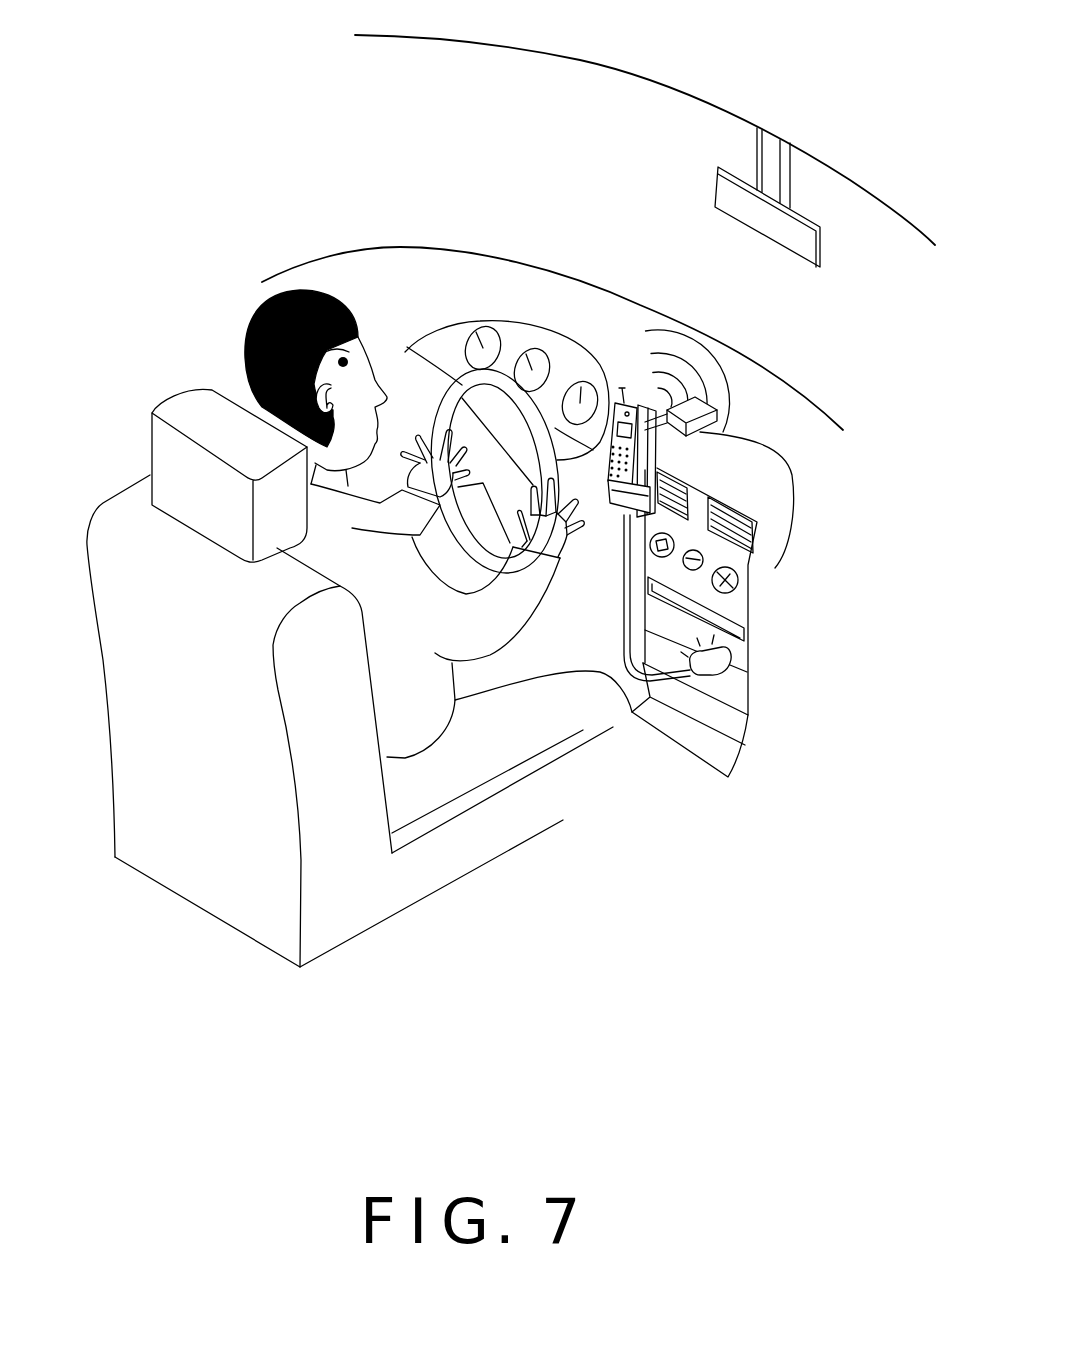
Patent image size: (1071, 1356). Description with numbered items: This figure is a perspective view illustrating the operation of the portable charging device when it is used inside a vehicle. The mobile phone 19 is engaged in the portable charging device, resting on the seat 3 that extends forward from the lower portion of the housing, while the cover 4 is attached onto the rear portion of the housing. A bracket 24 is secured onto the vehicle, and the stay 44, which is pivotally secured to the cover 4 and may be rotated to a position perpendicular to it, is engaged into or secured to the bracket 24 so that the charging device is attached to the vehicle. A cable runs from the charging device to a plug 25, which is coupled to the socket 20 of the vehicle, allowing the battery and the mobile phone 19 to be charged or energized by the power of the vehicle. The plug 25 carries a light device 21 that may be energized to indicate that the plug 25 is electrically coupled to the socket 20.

The seat 3 is at (624, 513).
The cover 4 is at (695, 458).
The mobile phone 19 is at (617, 400).
The socket of the vehicle 20 is at (733, 659).
The light device 21 is at (722, 648).
The bracket 24 is at (717, 436).
The plug 25 is at (703, 712).
The stay 44 is at (623, 390).